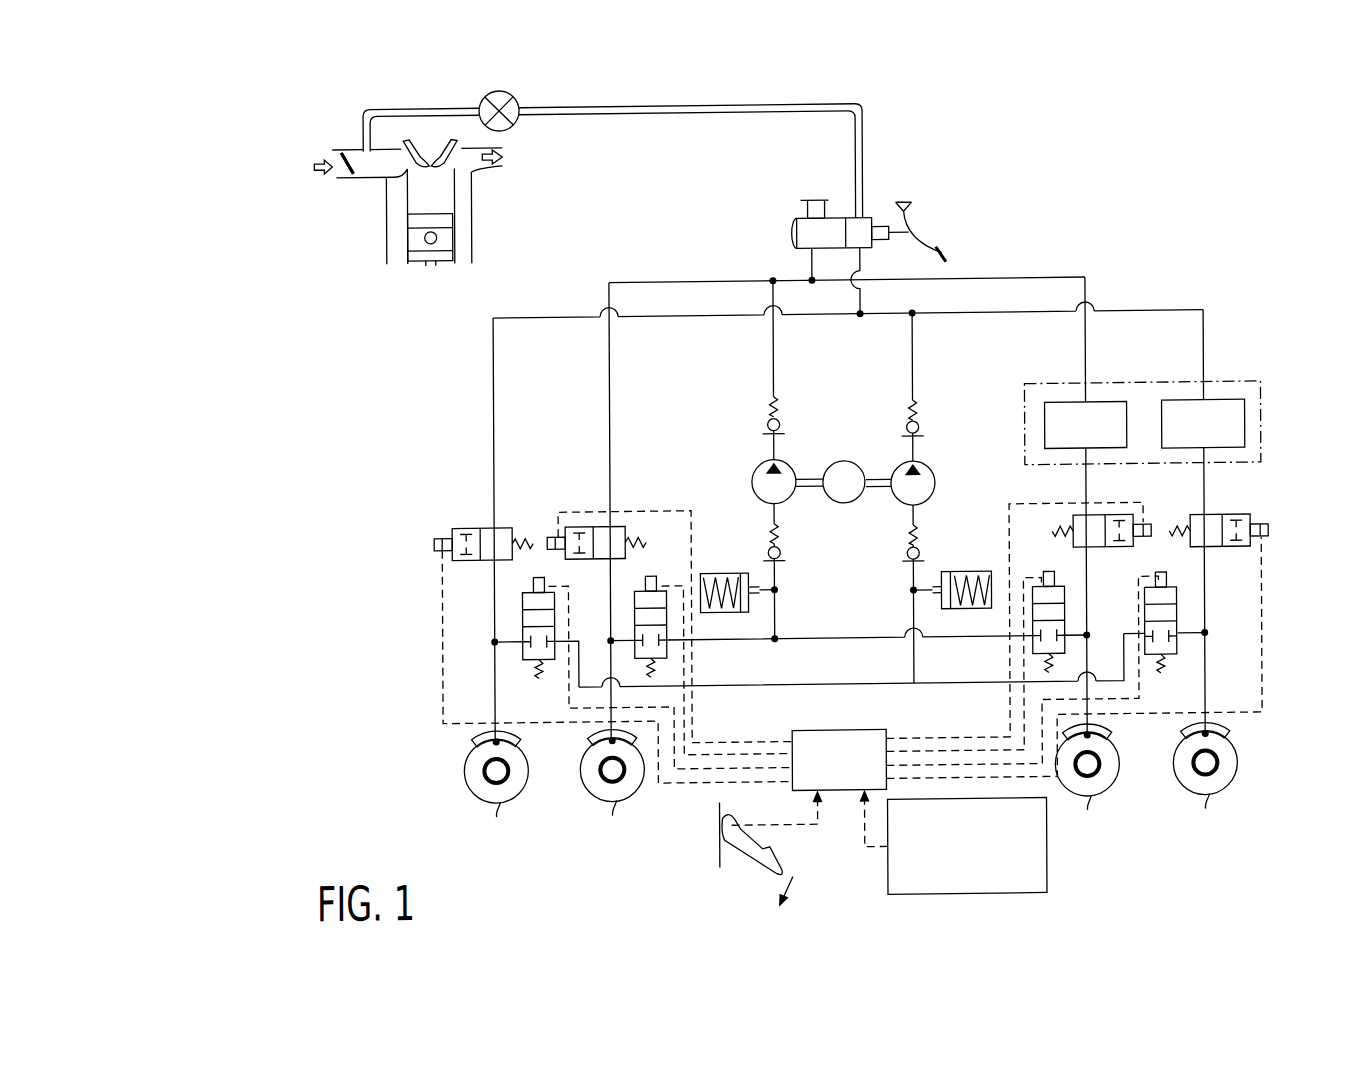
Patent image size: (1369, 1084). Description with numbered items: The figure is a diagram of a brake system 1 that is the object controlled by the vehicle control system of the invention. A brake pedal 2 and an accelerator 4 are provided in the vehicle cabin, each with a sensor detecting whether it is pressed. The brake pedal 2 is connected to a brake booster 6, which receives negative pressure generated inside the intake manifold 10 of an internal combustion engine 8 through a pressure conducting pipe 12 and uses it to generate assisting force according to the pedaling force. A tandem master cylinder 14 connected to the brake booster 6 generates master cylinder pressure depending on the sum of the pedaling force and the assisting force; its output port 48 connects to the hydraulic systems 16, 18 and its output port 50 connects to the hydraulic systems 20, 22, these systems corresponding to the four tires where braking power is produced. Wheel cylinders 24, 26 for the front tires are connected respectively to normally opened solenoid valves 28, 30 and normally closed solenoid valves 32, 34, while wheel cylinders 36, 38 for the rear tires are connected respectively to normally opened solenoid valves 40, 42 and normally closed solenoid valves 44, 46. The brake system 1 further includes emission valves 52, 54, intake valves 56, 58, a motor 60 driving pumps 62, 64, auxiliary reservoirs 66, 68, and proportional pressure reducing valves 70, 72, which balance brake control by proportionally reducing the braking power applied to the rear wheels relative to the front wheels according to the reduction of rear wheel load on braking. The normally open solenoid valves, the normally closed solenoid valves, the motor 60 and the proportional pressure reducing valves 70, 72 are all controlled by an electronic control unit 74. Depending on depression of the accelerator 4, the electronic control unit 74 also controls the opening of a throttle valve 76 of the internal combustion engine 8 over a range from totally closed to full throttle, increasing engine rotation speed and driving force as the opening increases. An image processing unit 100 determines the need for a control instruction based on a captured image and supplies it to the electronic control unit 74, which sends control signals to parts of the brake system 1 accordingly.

The brake system 1 is at (1122, 139).
The brake pedal 2 is at (945, 261).
The accelerator 4 is at (718, 841).
The brake booster 6 is at (868, 215).
The internal combustion engine 8 is at (385, 250).
The intake manifold 10 is at (369, 183).
The pressure conducting pipe 12 is at (428, 104).
The master cylinder 14 is at (802, 219).
The hydraulic system 16 is at (680, 322).
The hydraulic system 18 is at (985, 319).
The hydraulic system 20 is at (675, 284).
The hydraulic system 22 is at (1050, 284).
The wheel cylinder 24 is at (473, 748).
The wheel cylinder 26 is at (588, 749).
The normally opened solenoid valve 28 is at (502, 528).
The normally opened solenoid valve 30 is at (618, 528).
The normally closed solenoid valve 32 is at (521, 610).
The normally closed solenoid valve 34 is at (633, 595).
The wheel cylinder 36 is at (1113, 733).
The wheel cylinder 38 is at (1233, 734).
The normally opened solenoid valve 40 is at (1066, 534).
The normally opened solenoid valve 42 is at (1230, 556).
The normally closed solenoid valve 44 is at (1061, 592).
The normally closed solenoid valve 46 is at (1176, 620).
The output port 48 is at (866, 262).
The output port 50 is at (805, 259).
The emission valve 52 is at (769, 424).
The emission valve 54 is at (921, 426).
The intake valve 56 is at (785, 562).
The intake valve 58 is at (905, 563).
The motor 60 is at (843, 509).
The pump 62 is at (792, 470).
The pump 64 is at (897, 470).
The auxiliary reservoir 66 is at (717, 576).
The auxiliary reservoir 68 is at (962, 577).
The proportional pressure reducing valve 70 is at (1223, 409).
The proportional pressure reducing valve 72 is at (1103, 408).
The electronic control unit (ECU) 74 is at (834, 734).
The throttle valve 76 is at (340, 160).
The image processing unit 100 is at (1049, 887).